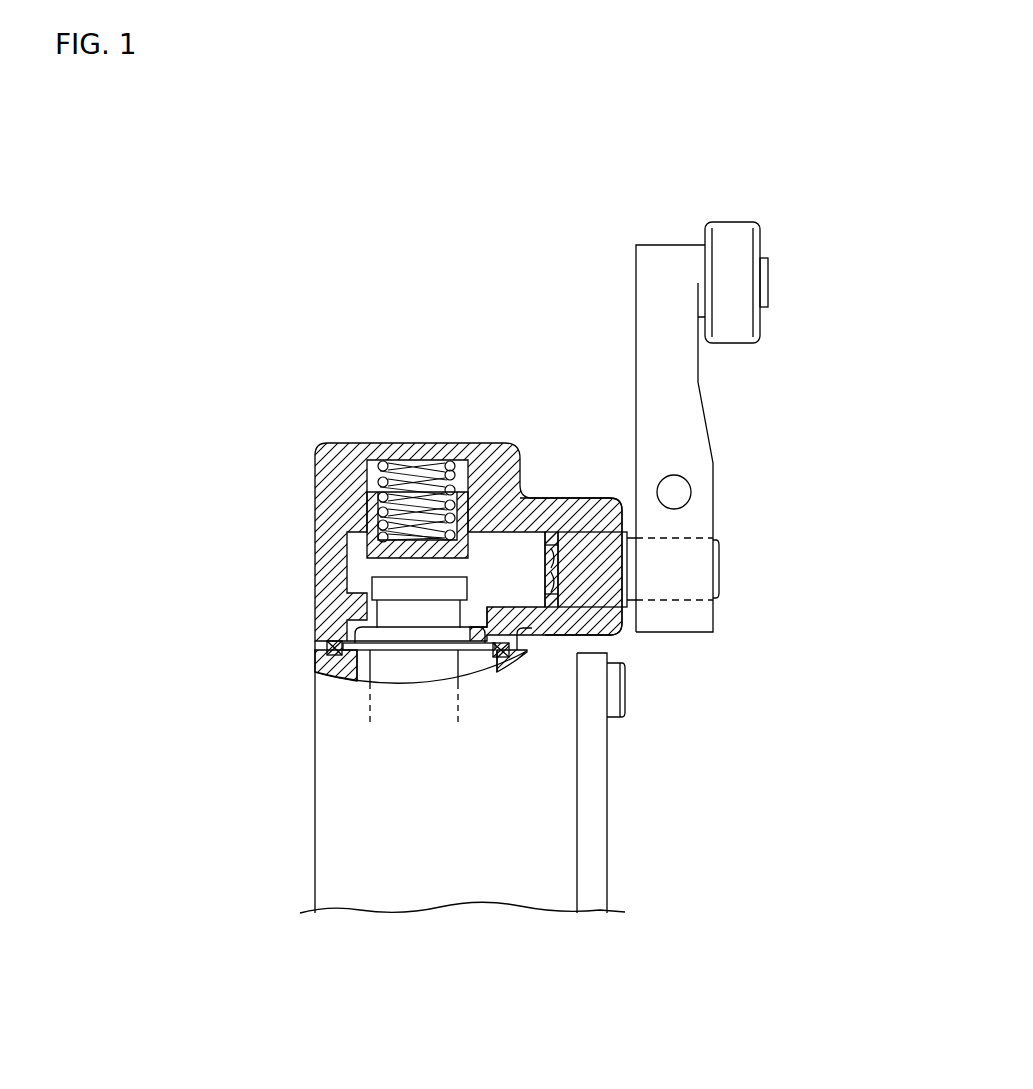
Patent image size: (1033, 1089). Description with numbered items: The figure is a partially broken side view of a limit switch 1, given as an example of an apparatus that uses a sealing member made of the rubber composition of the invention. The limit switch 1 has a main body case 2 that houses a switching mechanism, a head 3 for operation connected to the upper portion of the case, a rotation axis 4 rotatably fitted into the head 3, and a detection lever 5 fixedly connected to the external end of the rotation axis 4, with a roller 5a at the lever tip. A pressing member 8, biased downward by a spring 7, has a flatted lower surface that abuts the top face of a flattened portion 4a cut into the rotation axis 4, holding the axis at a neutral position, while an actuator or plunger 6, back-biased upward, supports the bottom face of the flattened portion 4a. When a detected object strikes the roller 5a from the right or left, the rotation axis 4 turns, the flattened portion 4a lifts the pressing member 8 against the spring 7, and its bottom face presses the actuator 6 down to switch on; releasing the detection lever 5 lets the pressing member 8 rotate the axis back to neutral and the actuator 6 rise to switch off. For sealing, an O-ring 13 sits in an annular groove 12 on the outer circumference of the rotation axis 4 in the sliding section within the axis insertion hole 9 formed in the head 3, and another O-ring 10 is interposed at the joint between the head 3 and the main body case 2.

The limit switch 1 is at (300, 322).
The main body case 2 is at (315, 783).
The head for operation 3 is at (313, 477).
The rotation axis 4 is at (512, 550).
The flattened portion 4a is at (410, 563).
The detection lever 5 is at (710, 432).
The roller 5a is at (727, 232).
The actuator (plunger) 6 is at (413, 665).
The spring 7 is at (450, 462).
The pressing member 8 is at (360, 516).
The axis insertion hole 9 is at (510, 588).
The O-ring 10 is at (315, 645).
The annular groove 12 is at (562, 578).
The O-ring 13 is at (549, 538).